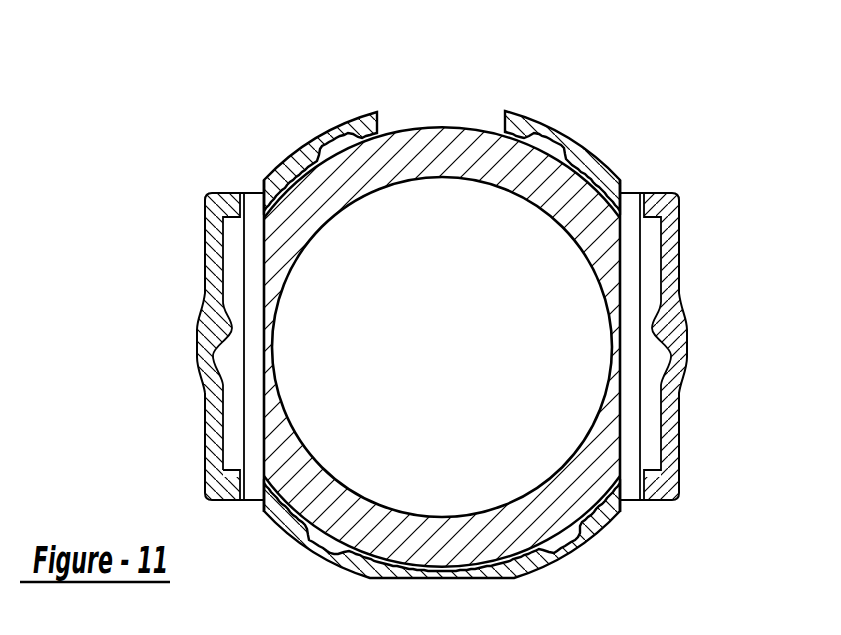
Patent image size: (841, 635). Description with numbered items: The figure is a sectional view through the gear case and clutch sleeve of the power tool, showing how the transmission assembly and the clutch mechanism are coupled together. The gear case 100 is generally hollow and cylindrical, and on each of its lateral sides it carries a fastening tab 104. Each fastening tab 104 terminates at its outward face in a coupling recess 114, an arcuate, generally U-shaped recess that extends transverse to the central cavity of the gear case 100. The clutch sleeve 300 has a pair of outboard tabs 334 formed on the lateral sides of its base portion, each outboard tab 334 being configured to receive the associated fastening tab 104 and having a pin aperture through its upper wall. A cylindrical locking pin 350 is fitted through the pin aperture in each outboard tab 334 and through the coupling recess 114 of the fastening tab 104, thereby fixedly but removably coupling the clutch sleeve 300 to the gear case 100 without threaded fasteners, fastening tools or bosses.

The gear case 100 is at (446, 138).
The clutch sleeve 300 is at (595, 165).
The outboard tab 334 is at (203, 195).
The locking pin 350 is at (253, 250).
The coupling recess 114 is at (218, 348).
The fastening tab 104 is at (230, 457).